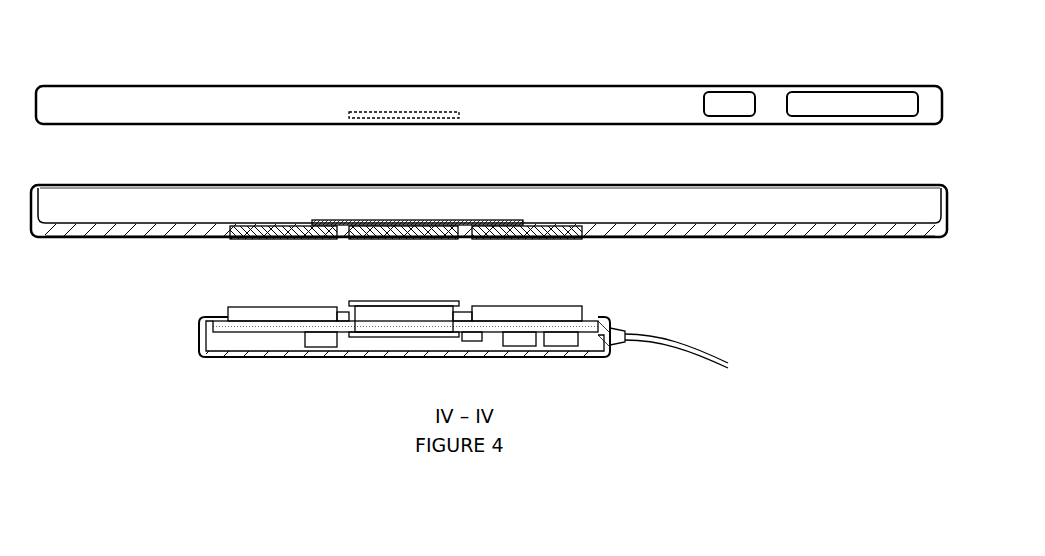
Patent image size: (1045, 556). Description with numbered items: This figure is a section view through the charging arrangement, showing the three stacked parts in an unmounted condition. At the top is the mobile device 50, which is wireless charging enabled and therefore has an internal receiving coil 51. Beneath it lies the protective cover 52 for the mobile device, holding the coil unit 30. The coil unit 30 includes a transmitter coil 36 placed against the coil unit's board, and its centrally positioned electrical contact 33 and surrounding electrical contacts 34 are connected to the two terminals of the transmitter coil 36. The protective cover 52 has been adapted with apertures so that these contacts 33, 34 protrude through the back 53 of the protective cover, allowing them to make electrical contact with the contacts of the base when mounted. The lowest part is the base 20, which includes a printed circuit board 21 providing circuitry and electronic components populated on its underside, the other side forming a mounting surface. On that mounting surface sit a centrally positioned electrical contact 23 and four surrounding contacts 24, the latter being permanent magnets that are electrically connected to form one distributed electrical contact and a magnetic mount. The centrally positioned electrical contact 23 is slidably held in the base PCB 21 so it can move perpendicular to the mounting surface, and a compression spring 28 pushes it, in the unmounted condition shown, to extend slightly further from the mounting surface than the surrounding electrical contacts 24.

The base 20 is at (175, 309).
The printed circuit board 21 is at (242, 327).
The centrally positioned electrical contact 23 is at (400, 303).
The surrounding contacts 24 is at (263, 313).
The compression spring 28 is at (458, 312).
The coil unit 30 is at (272, 207).
The centrally positioned electrical contact 33 is at (432, 233).
The surrounding electrical contacts 34 is at (245, 237).
The transmitter coil 36 is at (467, 220).
The mobile device 50 is at (661, 97).
The receiving coil 51 is at (438, 112).
The protective cover 52 is at (879, 207).
The back 53 is at (672, 230).